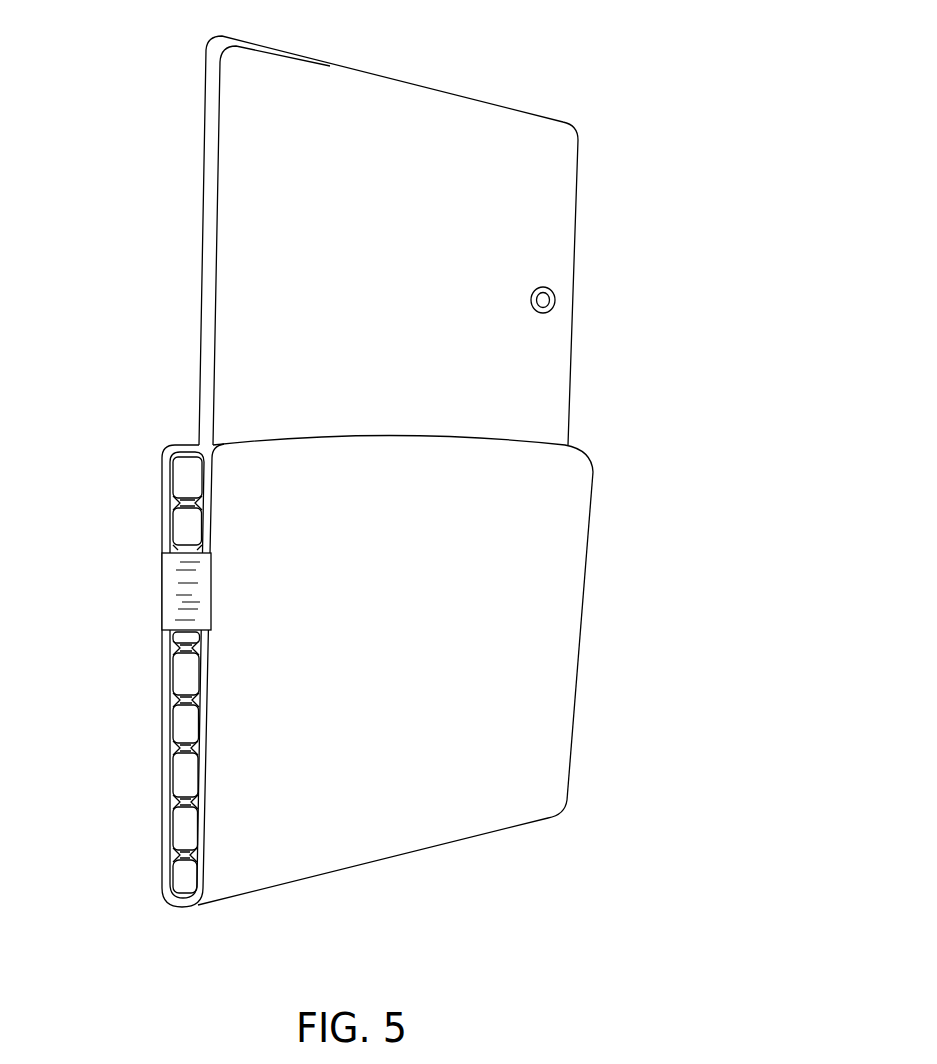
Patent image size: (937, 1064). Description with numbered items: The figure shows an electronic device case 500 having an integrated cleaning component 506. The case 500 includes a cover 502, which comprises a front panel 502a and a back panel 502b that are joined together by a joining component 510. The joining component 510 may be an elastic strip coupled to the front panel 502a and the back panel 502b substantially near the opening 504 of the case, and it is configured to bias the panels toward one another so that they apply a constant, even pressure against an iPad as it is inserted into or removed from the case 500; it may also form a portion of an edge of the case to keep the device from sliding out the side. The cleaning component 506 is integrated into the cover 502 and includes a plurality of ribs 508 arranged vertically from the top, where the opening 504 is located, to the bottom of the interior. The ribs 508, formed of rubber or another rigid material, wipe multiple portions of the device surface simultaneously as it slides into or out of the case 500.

The electronic device case 500 is at (415, 471).
The cover 502 is at (442, 671).
The front panel 502a is at (560, 753).
The back panel 502b is at (163, 486).
The opening 504 is at (580, 433).
The cleaning component 506 is at (167, 675).
The ribs 508 is at (168, 648).
The joining component 510 is at (162, 592).